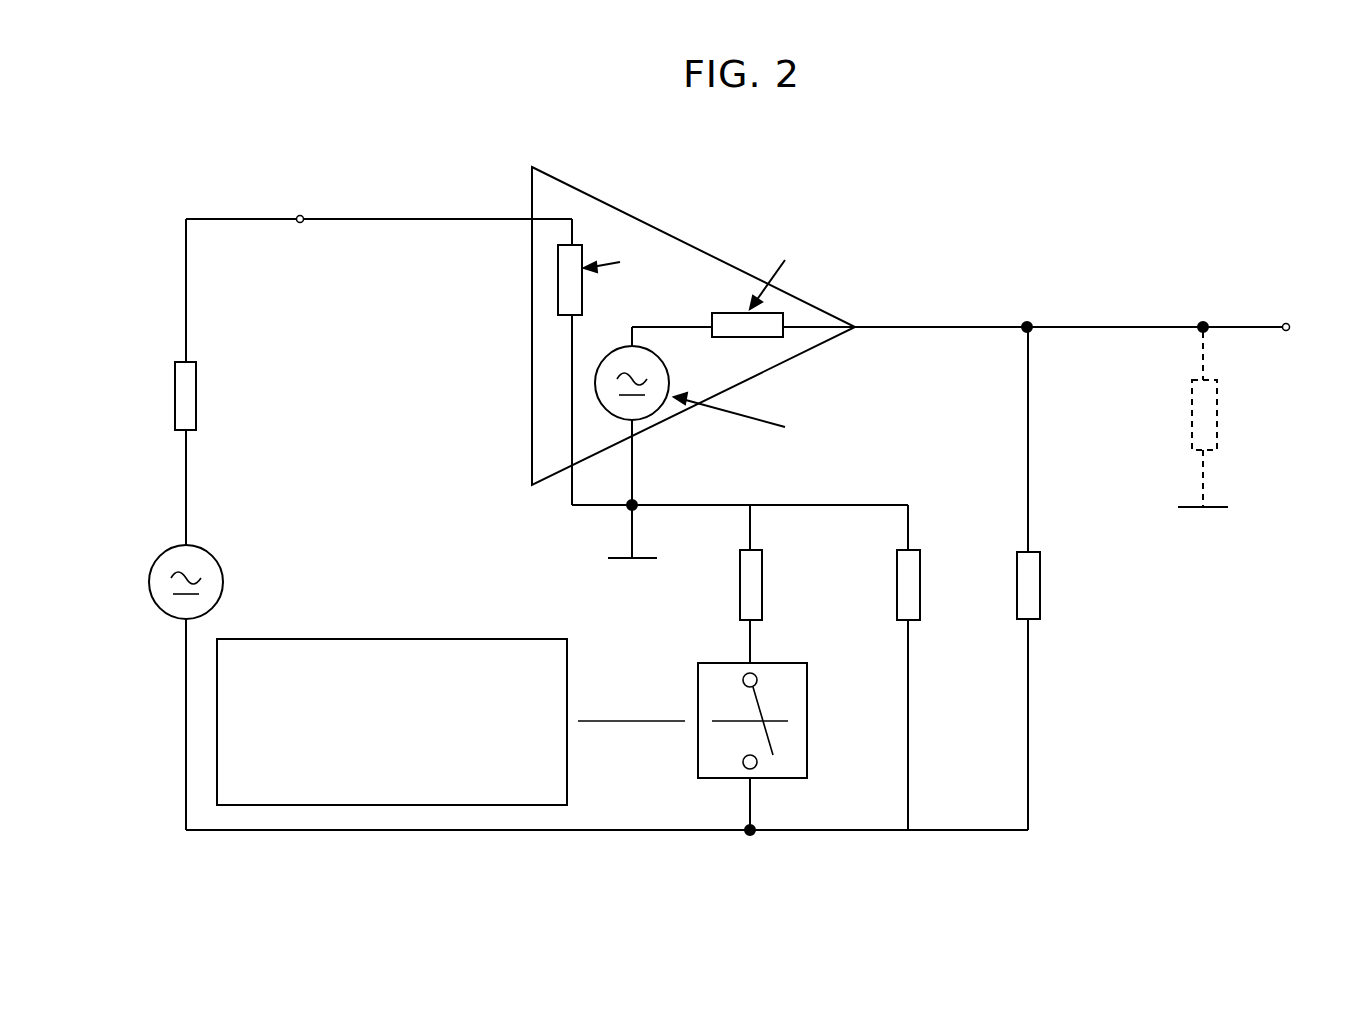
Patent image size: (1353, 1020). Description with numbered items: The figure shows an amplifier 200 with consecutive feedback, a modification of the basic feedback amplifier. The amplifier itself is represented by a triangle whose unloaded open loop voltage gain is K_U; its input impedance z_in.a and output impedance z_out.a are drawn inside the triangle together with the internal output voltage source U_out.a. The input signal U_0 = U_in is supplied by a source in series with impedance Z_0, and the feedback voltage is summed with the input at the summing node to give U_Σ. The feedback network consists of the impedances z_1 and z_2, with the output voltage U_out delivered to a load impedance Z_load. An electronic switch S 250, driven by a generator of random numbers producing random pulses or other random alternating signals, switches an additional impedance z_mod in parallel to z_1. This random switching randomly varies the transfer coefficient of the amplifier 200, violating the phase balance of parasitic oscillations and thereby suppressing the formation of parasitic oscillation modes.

The amplifier 200 is at (1073, 150).
The electronic switch S 250 is at (807, 778).
The impedance Z0 0 is at (227, 396).
The impedance Z1 1 is at (937, 667).
The impedance Z2 2 is at (1064, 578).